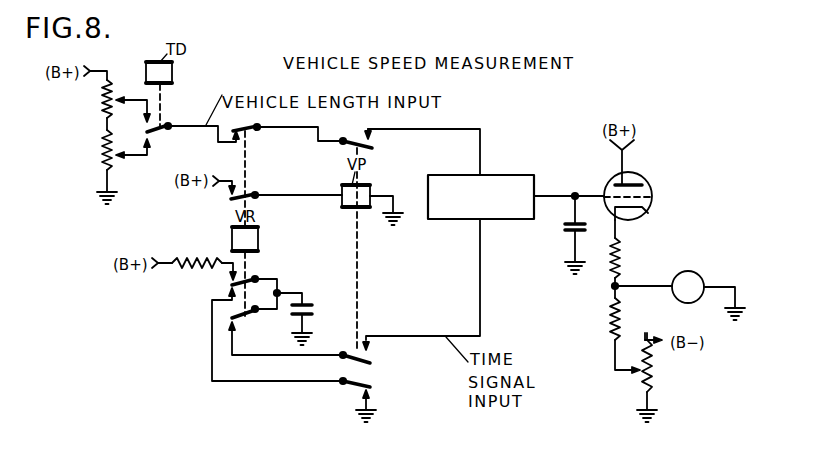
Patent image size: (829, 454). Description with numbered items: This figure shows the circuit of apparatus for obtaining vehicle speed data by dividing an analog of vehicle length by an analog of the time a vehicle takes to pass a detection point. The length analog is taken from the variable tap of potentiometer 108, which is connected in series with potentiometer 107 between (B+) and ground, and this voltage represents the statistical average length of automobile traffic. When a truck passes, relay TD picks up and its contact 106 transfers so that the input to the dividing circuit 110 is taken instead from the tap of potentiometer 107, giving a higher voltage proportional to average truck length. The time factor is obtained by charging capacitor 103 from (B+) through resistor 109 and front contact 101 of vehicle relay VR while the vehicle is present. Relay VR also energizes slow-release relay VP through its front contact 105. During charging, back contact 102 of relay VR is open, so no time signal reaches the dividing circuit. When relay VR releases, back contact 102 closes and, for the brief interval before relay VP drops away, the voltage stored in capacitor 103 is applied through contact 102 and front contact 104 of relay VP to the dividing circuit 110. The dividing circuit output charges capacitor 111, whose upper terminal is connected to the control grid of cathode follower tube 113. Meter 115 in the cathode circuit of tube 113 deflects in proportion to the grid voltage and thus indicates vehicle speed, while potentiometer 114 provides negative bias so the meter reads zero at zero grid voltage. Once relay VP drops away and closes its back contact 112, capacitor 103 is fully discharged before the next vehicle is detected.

The front contact of relay VR 101 is at (250, 282).
The back contact of relay VR 102 is at (241, 317).
The capacitor 103 is at (305, 306).
The front contact of relay VP 104 is at (344, 357).
The front contact of relay VR 105 is at (248, 197).
The contact of relay TD 106 is at (163, 128).
The potentiometer 107 is at (102, 97).
The potentiometer 108 is at (103, 150).
The resistor 109 is at (199, 260).
The dividing circuit 110 is at (490, 176).
The capacitor 111 is at (570, 228).
The back contact of relay VP 112 is at (344, 385).
The cathode follower tube 113 is at (641, 176).
The potentiometer 114 is at (653, 367).
The meter 115 is at (697, 272).